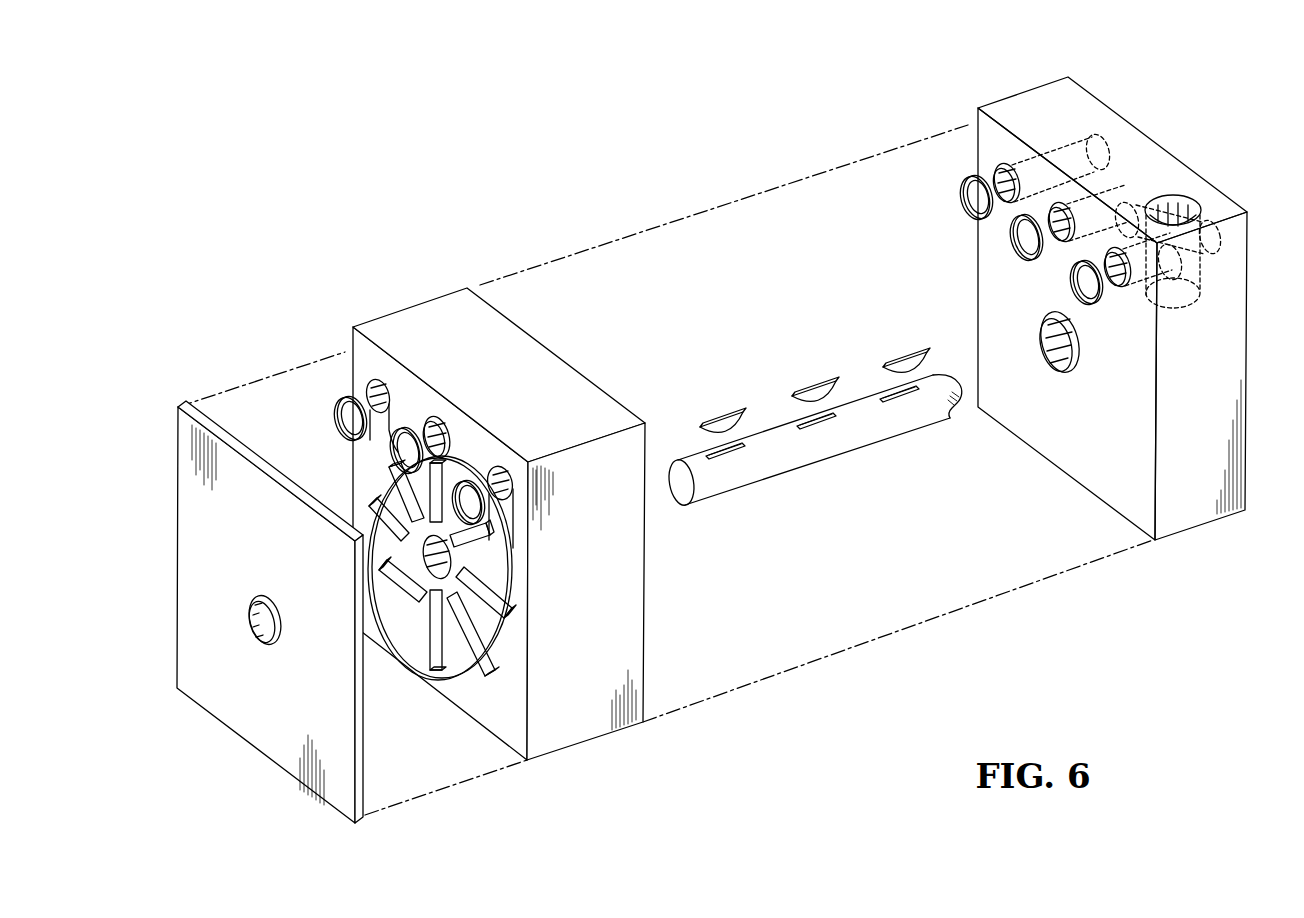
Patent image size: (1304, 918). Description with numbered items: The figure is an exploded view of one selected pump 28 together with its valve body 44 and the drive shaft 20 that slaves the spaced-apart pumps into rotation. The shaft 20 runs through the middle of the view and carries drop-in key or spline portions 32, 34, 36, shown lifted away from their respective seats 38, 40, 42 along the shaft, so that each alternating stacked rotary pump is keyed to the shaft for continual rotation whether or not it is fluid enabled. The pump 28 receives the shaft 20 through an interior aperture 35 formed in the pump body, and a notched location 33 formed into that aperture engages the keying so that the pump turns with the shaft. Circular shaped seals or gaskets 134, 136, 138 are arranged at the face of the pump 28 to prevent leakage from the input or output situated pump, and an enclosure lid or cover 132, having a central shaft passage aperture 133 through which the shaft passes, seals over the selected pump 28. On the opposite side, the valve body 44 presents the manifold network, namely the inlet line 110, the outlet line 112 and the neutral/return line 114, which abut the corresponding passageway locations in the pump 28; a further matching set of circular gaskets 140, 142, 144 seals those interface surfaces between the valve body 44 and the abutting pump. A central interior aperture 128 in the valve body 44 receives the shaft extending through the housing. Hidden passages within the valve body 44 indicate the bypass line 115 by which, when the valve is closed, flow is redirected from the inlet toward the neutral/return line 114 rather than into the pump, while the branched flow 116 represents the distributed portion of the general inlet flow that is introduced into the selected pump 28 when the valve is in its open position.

The drive shaft 20 is at (715, 498).
The selected pump 28 is at (431, 323).
The key portion 32 is at (727, 413).
The notched location 33 is at (405, 625).
The key portion 34 is at (812, 382).
The interior aperture 35 is at (465, 665).
The key portion 36 is at (903, 352).
The first keyway 38 is at (724, 452).
The second keyway 40 is at (815, 425).
The third keyway 42 is at (897, 398).
The valve body 44 is at (1025, 108).
The inlet line 110 is at (488, 475).
The outlet line 112 is at (352, 343).
The neutral/return line 114 is at (437, 428).
The bypass line 115 is at (1130, 223).
The branched flow 116 is at (1190, 203).
The central interior aperture 128 is at (1048, 343).
The enclosure lid or cover 132 is at (200, 528).
The central shaft passage aperture 133 is at (250, 622).
The circular seal or gasket 134 is at (340, 423).
The circular seal or gasket 136 is at (405, 430).
The circular seal or gasket 138 is at (459, 487).
The circular gasket 140 is at (968, 203).
The circular gasket 142 is at (1015, 250).
The circular gasket 144 is at (1072, 268).